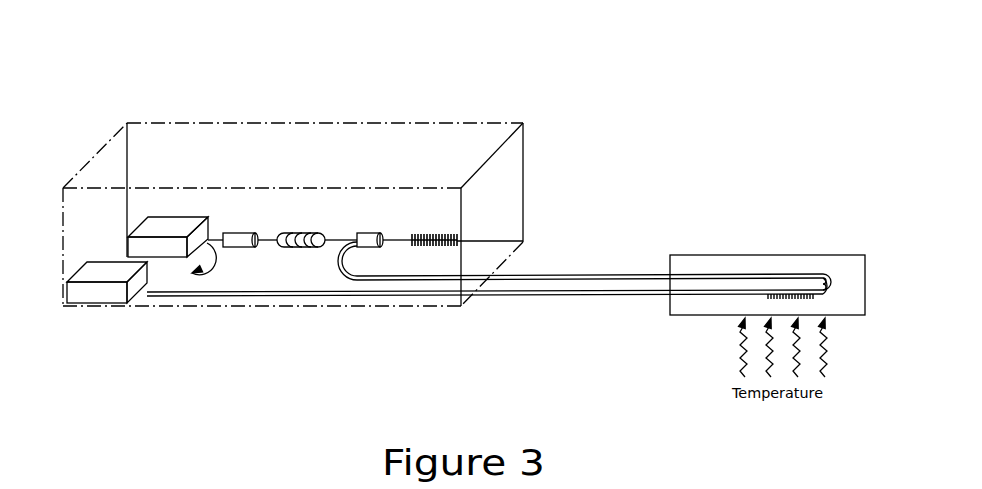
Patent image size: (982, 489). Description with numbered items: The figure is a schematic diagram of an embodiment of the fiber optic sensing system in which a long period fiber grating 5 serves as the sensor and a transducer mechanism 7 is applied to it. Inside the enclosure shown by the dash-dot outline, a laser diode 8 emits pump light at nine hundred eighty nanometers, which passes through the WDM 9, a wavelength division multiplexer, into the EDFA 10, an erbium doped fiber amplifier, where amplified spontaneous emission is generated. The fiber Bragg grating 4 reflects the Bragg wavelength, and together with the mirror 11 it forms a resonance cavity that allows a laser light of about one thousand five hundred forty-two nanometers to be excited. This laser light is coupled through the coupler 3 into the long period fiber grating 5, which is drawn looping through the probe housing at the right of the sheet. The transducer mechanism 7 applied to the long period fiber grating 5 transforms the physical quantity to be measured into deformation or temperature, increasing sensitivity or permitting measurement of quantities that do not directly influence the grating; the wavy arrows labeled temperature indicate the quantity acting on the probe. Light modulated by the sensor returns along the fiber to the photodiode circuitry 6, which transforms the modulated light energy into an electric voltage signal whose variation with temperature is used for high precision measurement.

The coupler 3 is at (379, 232).
The fiber Bragg grating 4 is at (440, 236).
The long period fiber grating 5 is at (779, 272).
The photodiode circuitry 6 is at (107, 299).
The transducer mechanism 7 is at (816, 255).
The laser diode 8 is at (152, 222).
The WDM 9 is at (255, 232).
The EDFA 10 is at (319, 233).
The mirror 11 is at (200, 282).